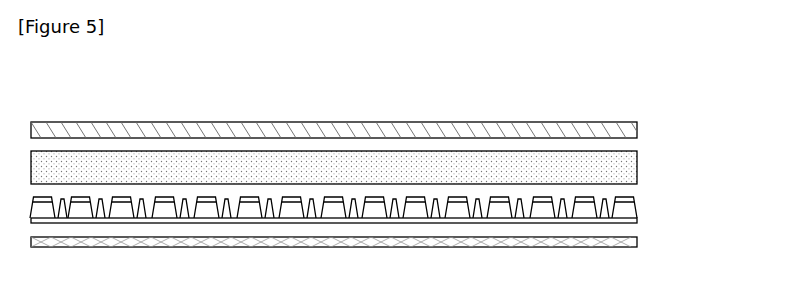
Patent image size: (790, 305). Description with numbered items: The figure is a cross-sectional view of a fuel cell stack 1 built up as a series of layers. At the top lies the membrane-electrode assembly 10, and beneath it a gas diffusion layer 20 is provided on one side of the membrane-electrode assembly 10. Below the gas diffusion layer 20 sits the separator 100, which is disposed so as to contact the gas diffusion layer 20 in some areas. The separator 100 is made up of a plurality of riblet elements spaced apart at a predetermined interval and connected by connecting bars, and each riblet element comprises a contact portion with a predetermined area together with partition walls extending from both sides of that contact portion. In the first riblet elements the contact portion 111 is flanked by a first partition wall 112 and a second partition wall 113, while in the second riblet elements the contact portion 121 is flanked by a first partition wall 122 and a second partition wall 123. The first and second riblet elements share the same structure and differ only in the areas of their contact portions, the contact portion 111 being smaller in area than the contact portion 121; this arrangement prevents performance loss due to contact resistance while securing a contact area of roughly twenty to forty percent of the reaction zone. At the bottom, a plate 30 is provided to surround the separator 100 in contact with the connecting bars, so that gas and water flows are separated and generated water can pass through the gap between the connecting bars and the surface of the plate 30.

The fuel cell stack 1 is at (37, 68).
The membrane-electrode assembly 10 is at (639, 126).
The gas diffusion layer 20 is at (639, 166).
The plate 30 is at (639, 243).
The separator 100 is at (377, 243).
The contact portion 111 is at (146, 217).
The first partition wall 112 is at (158, 212).
The second partition wall 113 is at (185, 211).
The contact portion 121 is at (358, 217).
The first partition wall 122 is at (372, 212).
The second partition wall 123 is at (397, 212).